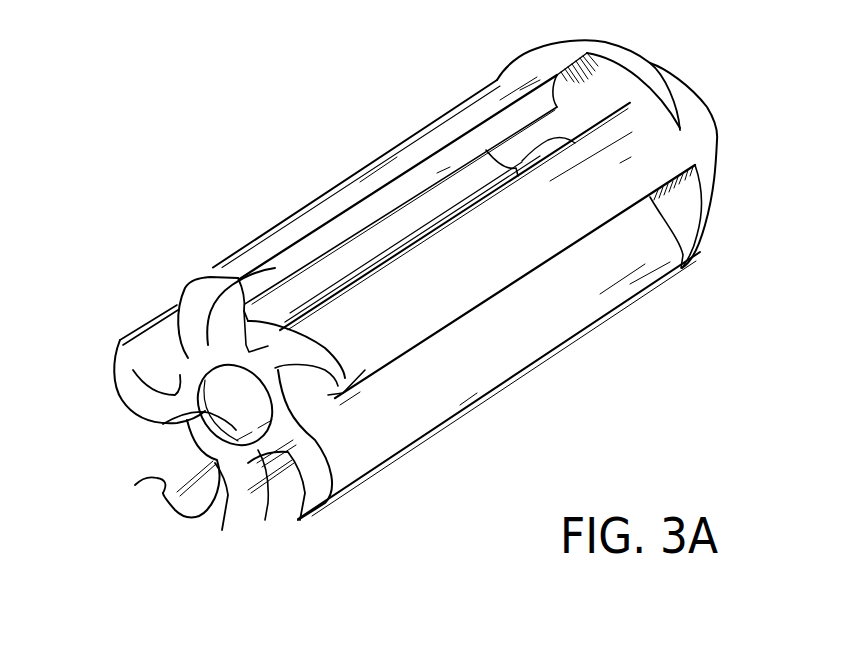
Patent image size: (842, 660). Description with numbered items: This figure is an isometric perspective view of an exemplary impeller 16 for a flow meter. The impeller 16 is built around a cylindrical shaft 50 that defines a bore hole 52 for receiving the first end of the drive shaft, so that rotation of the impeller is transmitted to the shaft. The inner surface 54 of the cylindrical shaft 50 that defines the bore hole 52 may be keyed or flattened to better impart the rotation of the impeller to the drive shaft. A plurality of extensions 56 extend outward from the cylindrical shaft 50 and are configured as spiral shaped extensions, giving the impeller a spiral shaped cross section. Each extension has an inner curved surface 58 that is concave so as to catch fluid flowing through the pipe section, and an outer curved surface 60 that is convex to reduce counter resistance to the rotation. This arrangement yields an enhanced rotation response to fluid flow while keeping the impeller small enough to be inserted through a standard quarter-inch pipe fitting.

The impeller 16 is at (232, 158).
The cylindrical shaft 50 is at (282, 462).
The bore hole 52 is at (210, 413).
The inner surface 54 is at (240, 348).
The extensions 56 is at (117, 377).
The inner curved surface 58 is at (157, 478).
The outer curved surface 60 is at (226, 516).